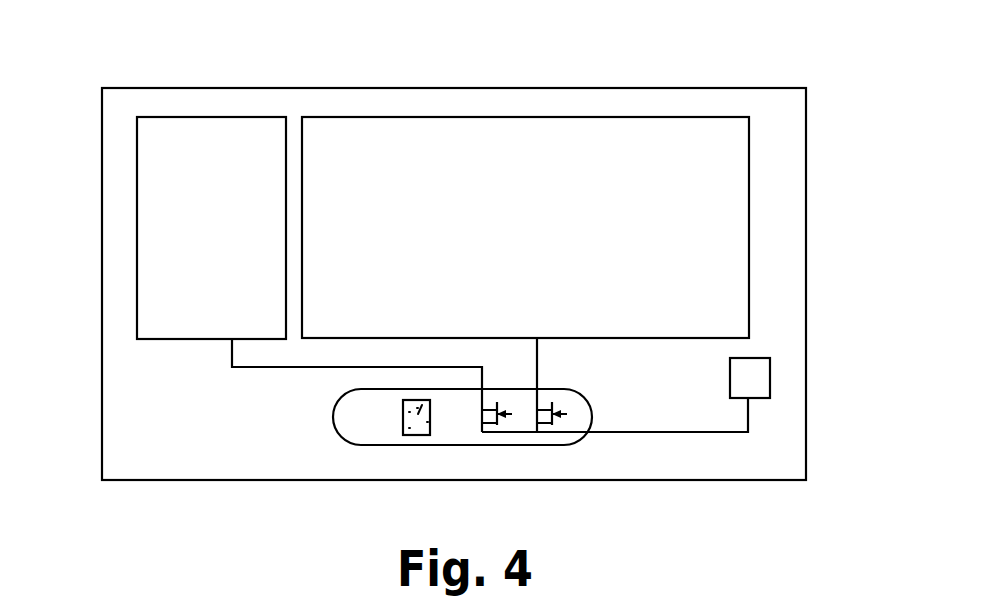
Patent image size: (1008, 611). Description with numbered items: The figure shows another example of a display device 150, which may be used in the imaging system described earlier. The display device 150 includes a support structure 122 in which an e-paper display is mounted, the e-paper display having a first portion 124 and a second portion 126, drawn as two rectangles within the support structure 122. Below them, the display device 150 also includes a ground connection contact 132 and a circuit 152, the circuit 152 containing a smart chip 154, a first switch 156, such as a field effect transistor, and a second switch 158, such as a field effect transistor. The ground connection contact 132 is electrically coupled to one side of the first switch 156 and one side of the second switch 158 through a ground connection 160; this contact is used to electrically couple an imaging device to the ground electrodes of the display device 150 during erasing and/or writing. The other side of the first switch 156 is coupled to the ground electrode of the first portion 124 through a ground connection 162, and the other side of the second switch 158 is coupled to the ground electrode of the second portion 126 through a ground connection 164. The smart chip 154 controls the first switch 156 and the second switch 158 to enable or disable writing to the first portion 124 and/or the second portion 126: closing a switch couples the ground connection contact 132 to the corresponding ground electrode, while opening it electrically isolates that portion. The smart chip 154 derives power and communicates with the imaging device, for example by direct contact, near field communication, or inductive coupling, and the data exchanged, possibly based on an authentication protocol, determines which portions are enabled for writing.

The display device 150 is at (715, 78).
The support structure 122 is at (778, 132).
The first portion 124 is at (733, 252).
The second portion 126 is at (160, 270).
The ground connection contact 132 is at (752, 381).
The circuit 152 is at (373, 447).
The smart chip 154 is at (417, 437).
The first switch 156 is at (553, 418).
The second switch 158 is at (498, 418).
The ground connection 160 is at (645, 432).
The ground connection 162 is at (540, 357).
The ground connection 164 is at (413, 367).